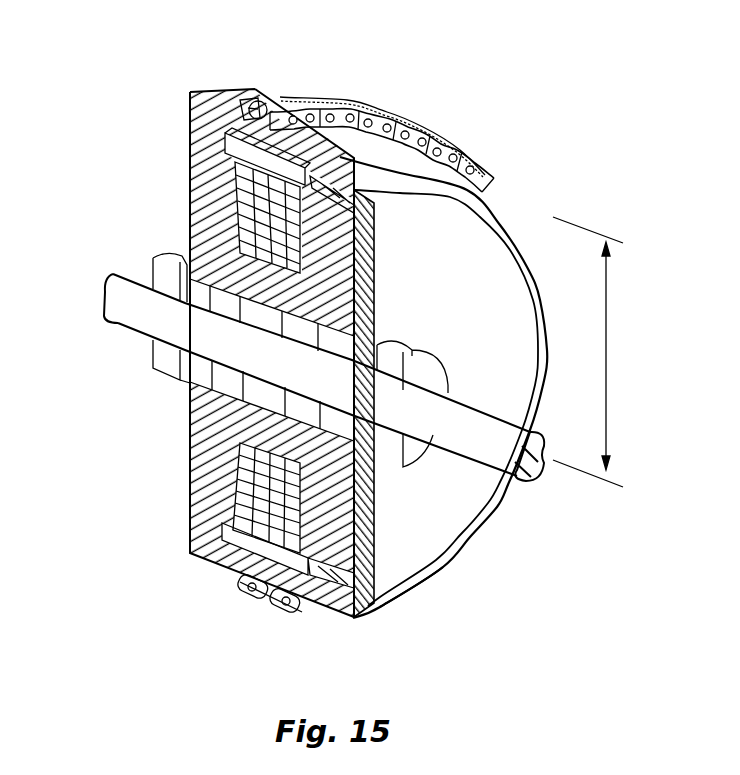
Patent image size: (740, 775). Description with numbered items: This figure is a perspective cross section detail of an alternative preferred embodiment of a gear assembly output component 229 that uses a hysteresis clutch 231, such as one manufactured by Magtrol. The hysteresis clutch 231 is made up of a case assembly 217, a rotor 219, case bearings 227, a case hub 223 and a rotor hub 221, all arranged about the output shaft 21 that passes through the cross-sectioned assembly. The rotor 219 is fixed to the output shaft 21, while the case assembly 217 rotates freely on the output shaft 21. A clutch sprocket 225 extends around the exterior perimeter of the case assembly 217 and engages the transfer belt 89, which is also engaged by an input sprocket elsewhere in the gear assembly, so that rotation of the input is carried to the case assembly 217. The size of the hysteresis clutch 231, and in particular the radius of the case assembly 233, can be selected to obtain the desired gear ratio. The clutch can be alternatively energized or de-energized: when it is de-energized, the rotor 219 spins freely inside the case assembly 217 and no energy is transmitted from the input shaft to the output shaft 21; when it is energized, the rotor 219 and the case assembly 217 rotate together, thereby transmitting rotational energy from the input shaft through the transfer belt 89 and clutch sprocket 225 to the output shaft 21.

The case assembly 217 is at (240, 88).
The rotor 219 is at (413, 223).
The rotor hub 221 is at (410, 347).
The case hub 223 is at (160, 253).
The clutch sprocket 225 is at (295, 92).
The case bearings 227 is at (155, 368).
The gear assembly output component 229 is at (437, 545).
The hysteresis clutch 231 is at (187, 460).
The radius of the case assembly 233 is at (610, 338).
The transfer belt 89 is at (383, 117).
The output shaft 21 is at (492, 477).